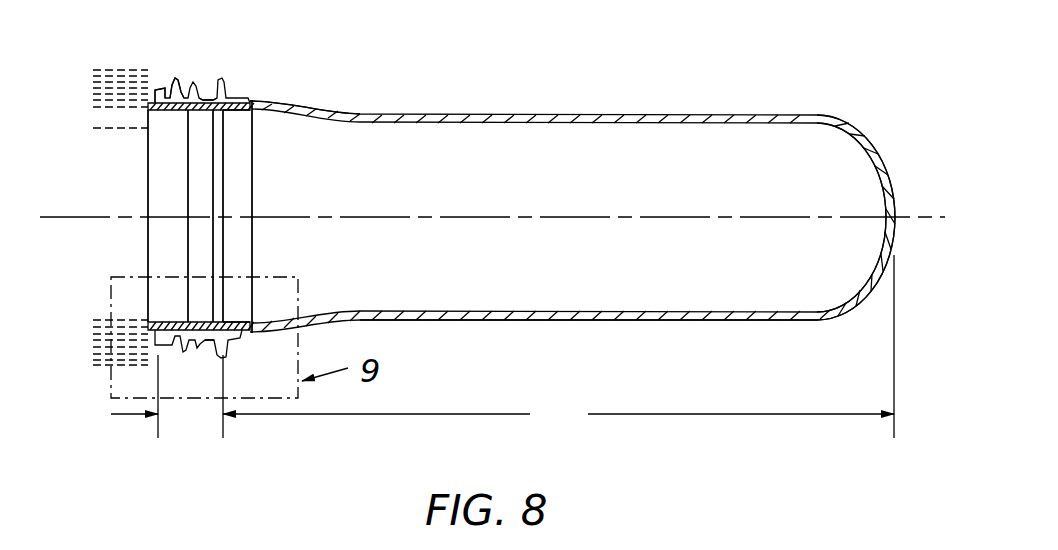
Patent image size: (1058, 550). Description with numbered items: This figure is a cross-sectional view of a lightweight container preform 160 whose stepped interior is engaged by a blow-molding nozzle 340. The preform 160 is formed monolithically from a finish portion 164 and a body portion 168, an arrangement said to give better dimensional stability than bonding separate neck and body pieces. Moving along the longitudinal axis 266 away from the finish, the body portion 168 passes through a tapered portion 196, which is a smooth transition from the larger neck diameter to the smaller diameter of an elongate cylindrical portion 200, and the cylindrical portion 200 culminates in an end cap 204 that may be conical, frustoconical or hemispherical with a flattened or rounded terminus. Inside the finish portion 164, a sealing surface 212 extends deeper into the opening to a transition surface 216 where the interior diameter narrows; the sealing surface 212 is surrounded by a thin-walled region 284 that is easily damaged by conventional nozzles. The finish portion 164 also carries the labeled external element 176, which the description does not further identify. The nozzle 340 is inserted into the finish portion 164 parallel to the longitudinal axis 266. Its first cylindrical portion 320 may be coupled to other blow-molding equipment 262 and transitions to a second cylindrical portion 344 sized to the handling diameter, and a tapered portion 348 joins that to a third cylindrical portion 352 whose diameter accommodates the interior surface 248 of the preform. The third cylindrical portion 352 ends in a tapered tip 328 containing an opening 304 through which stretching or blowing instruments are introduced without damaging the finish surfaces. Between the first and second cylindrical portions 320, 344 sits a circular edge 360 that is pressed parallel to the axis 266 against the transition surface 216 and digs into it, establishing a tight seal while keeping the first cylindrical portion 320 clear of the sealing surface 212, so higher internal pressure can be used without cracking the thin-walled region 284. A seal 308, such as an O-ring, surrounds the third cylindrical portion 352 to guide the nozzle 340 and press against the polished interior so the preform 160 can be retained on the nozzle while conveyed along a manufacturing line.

The preform 160 is at (585, 95).
The finish portion 164 is at (167, 396).
The body portion 168 is at (558, 346).
The thread 176 is at (222, 80).
The tapered portion 196 is at (268, 100).
The cylindrical portion 200 is at (628, 322).
The end cap 204 is at (900, 215).
The sealing surface 212 is at (157, 95).
The transition surface 216 is at (155, 340).
The interior surface 248 is at (561, 204).
The blow-molding equipment 262 is at (128, 70).
The longitudinal axis 266 is at (745, 213).
The thin-walled region 284 is at (167, 95).
The opening 304 is at (262, 193).
The seal 308 is at (237, 112).
The first cylindrical portion 320 is at (158, 192).
The tapered tip 328 is at (251, 108).
The nozzle 340 is at (138, 245).
The second cylindrical portion 344 is at (202, 153).
The tapered portion 348 is at (220, 227).
The third cylindrical portion 352 is at (235, 250).
The circular edge 360 is at (207, 97).